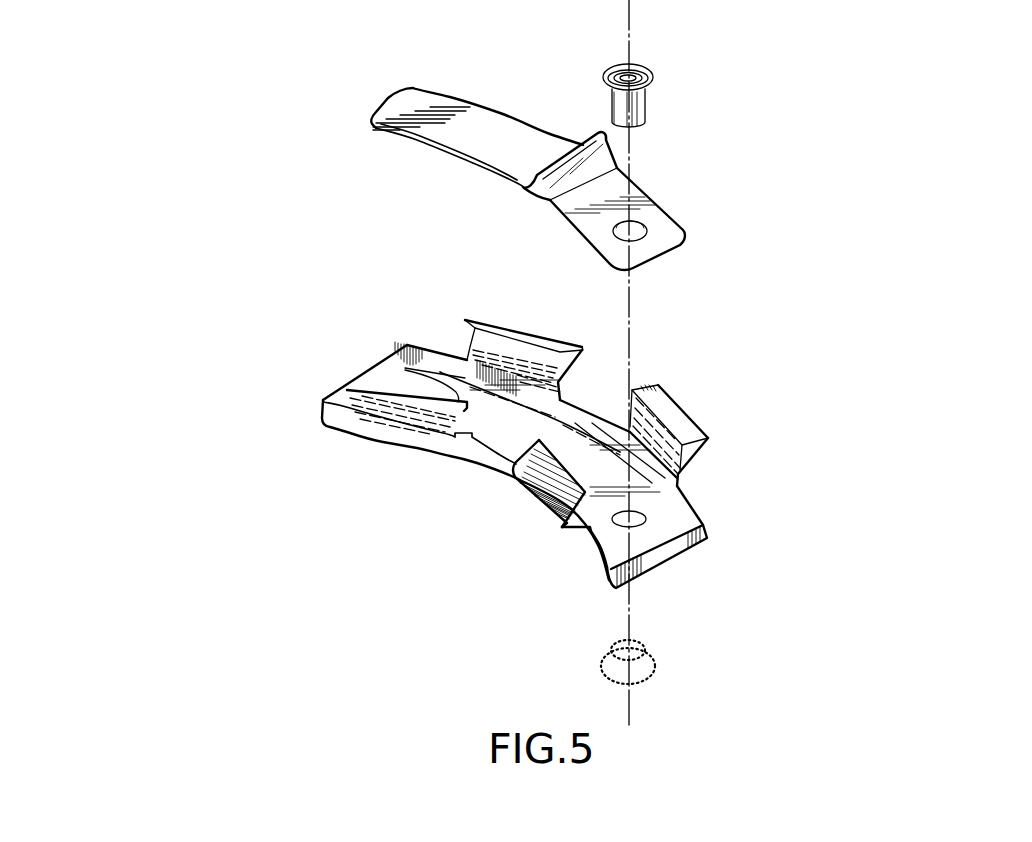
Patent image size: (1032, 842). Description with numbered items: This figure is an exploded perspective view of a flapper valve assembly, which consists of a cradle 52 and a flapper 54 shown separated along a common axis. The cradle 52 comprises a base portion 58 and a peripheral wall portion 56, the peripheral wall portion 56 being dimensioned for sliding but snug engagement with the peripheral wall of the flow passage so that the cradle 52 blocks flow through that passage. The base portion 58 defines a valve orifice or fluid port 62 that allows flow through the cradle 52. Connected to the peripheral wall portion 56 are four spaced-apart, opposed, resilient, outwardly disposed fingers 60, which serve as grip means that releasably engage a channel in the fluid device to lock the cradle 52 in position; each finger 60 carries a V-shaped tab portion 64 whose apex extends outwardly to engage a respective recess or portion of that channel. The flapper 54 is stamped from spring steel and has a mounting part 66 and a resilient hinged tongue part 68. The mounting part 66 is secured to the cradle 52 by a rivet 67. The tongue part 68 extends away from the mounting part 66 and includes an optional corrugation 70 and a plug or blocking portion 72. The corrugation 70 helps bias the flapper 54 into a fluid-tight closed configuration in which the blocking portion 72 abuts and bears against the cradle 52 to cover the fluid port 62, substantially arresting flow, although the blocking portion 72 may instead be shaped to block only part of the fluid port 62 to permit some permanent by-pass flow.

The cradle 52 is at (758, 318).
The flapper 54 is at (580, 139).
The peripheral wall portion 56 is at (546, 444).
The base portion 58 is at (668, 518).
The resilient fingers 60 is at (585, 350).
The fluid port 62 is at (424, 370).
The V-shaped tab portion 64 is at (528, 330).
The mounting part 66 is at (598, 220).
The rivet 67 is at (646, 100).
The tongue part 68 is at (477, 129).
The corrugation 70 is at (578, 128).
The blocking portion 72 is at (448, 166).